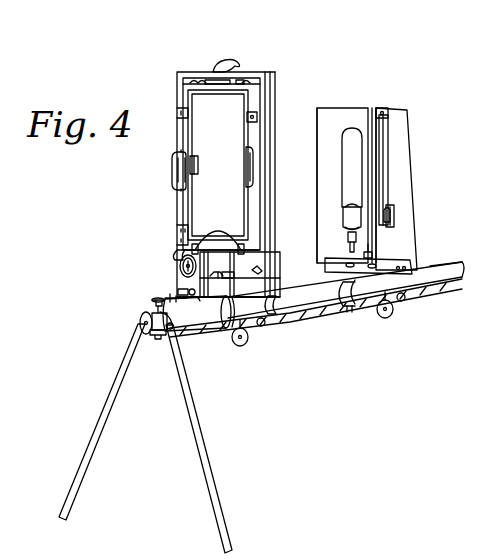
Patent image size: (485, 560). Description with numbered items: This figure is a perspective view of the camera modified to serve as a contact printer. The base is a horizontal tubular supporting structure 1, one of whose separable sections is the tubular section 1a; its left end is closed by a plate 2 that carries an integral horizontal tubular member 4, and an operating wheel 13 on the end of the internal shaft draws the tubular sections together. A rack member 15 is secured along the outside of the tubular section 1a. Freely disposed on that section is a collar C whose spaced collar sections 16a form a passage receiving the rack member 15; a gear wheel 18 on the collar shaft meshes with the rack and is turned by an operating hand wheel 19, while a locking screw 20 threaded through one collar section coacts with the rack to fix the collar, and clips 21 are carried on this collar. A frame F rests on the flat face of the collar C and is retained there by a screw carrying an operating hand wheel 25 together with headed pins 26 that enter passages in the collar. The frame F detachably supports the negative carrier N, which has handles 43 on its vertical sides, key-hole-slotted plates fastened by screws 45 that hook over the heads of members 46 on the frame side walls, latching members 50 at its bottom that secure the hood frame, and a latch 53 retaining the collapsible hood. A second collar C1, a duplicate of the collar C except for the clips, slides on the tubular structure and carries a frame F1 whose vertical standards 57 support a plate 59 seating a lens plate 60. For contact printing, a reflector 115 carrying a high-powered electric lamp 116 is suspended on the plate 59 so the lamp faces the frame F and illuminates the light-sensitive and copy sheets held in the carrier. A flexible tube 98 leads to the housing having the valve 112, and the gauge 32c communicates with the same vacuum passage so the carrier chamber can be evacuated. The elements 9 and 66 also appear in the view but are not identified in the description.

The negative carrier N is at (180, 200).
The frame F is at (278, 84).
The frame F1 is at (412, 170).
The horizontal tubular supporting structure 1 is at (307, 286).
The tubular section 1a is at (348, 305).
The plate 2 is at (157, 337).
The horizontal tubular member 4 is at (158, 313).
The tripod legs 9 is at (190, 364).
The operating wheel 13 is at (140, 320).
The rack member 15 is at (440, 295).
The collar sections 16a is at (212, 330).
The gear wheel 18 is at (452, 264).
The operating hand wheel 19 is at (246, 343).
The locking screw 20 is at (263, 326).
The clips 21 is at (276, 310).
The operating hand wheel 25 is at (228, 272).
The headed pins 26 is at (392, 262).
The gauge 32c is at (179, 264).
The handles 43 is at (175, 172).
The screws 45 is at (249, 118).
The members 46 is at (182, 112).
The latching members 50 is at (198, 243).
The latch 53 is at (200, 164).
The vertical standards 57 is at (410, 210).
The plate 59 is at (394, 107).
The lens plate 60 is at (386, 136).
The clip 66 is at (394, 218).
The flexible tube 98 is at (180, 288).
The valve 112 is at (168, 298).
The reflector 115 is at (324, 112).
The high-powered electric lamp 116 is at (350, 150).
The collar C is at (214, 314).
The second collar C1 is at (366, 275).